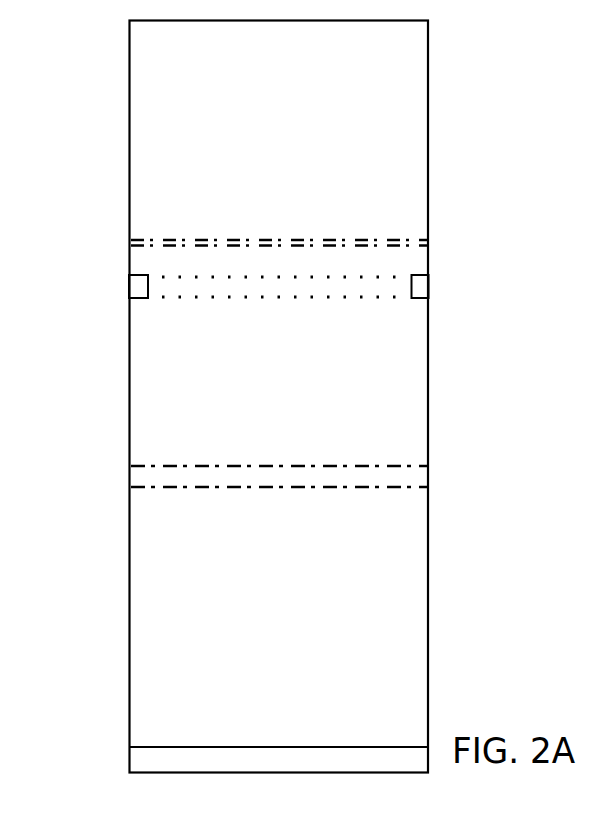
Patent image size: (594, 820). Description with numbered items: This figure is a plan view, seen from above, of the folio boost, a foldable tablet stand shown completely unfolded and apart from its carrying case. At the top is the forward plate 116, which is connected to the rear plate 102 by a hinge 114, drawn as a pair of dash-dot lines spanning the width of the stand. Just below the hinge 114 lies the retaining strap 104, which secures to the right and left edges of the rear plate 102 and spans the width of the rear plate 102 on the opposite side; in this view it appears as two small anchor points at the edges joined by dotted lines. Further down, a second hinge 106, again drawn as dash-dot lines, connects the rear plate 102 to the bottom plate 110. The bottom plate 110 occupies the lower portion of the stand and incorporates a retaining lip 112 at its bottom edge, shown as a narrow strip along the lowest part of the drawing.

The forward plate 116 is at (129, 97).
The hinge 114 is at (130, 243).
The retaining strap 104 is at (130, 287).
The back plate 102 is at (130, 393).
The hinge 106 is at (130, 477).
The bottom plate 110 is at (297, 622).
The retaining lip 112 is at (130, 760).